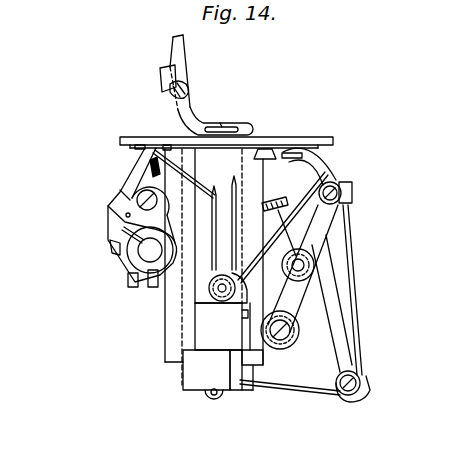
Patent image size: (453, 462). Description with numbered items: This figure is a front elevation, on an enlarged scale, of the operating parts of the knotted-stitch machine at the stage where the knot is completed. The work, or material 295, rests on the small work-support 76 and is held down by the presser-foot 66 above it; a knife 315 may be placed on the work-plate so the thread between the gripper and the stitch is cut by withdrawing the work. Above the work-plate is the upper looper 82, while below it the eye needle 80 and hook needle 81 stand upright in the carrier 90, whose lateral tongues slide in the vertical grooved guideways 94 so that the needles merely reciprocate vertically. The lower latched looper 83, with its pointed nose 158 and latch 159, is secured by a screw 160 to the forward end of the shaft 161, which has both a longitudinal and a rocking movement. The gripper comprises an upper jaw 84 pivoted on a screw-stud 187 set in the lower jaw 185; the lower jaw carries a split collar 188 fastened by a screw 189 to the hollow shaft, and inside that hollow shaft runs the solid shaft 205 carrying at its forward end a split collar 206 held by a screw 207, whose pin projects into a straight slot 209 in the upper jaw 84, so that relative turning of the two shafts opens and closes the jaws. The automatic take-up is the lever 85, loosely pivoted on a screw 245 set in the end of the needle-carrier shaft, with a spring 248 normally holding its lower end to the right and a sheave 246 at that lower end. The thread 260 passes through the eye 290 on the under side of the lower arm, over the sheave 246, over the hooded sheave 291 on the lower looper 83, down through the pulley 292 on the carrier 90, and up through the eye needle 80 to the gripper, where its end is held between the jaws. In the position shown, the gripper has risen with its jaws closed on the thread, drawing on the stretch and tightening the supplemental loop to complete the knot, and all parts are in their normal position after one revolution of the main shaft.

The upper looper 82 is at (178, 73).
The presser-foot 66 is at (190, 117).
The knife 315 is at (140, 145).
The work-support 76 is at (168, 145).
The pointed nose 158 is at (266, 149).
The material 295 is at (300, 137).
The latch 159 is at (300, 154).
The lower latched looper 83 is at (338, 170).
The hooded sheave 291 is at (352, 181).
The lower jaw 185 is at (150, 159).
The upper jaw 84 is at (127, 186).
The screw-stud 187 is at (127, 200).
The straight slot 209 is at (123, 203).
The split collar 206 is at (118, 227).
The screw 207 is at (112, 250).
The solid shaft 205 is at (147, 251).
The screw 189 is at (130, 278).
The split collar 188 is at (152, 283).
The eye needle 80 is at (214, 188).
The hook needle 81 is at (238, 187).
The pulley 292 is at (209, 300).
The carrier 90 is at (212, 350).
The eye 290 is at (215, 399).
The guideways 94 is at (173, 357).
The screw 245 is at (314, 272).
The spring 248 is at (327, 302).
The lever 85 is at (340, 332).
The screw 160 is at (290, 343).
The shaft 161 is at (279, 348).
The sheave 246 is at (363, 382).
The thread 260 is at (292, 392).